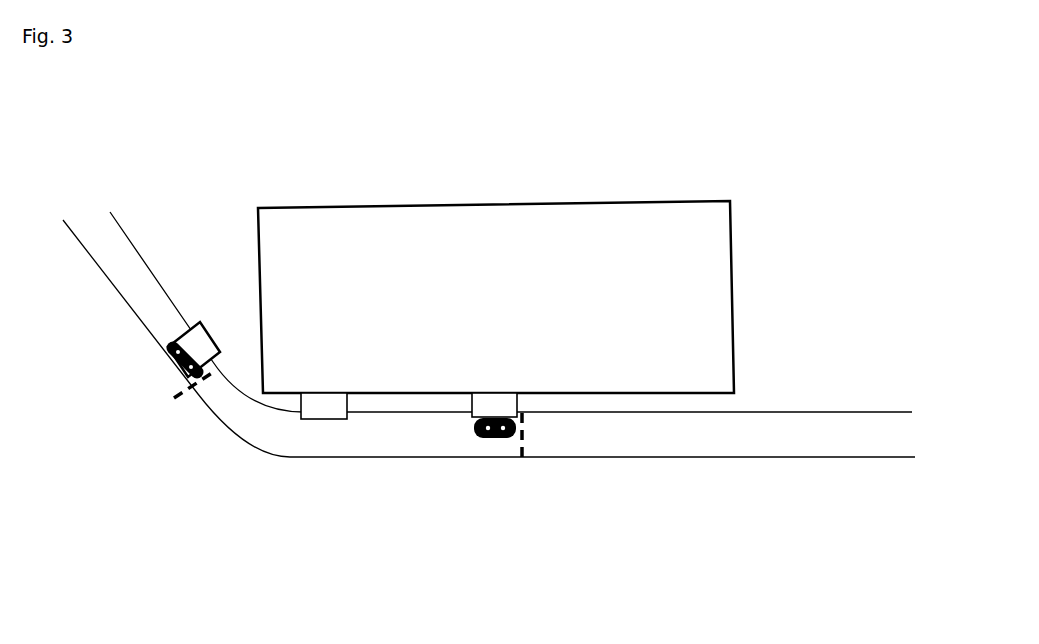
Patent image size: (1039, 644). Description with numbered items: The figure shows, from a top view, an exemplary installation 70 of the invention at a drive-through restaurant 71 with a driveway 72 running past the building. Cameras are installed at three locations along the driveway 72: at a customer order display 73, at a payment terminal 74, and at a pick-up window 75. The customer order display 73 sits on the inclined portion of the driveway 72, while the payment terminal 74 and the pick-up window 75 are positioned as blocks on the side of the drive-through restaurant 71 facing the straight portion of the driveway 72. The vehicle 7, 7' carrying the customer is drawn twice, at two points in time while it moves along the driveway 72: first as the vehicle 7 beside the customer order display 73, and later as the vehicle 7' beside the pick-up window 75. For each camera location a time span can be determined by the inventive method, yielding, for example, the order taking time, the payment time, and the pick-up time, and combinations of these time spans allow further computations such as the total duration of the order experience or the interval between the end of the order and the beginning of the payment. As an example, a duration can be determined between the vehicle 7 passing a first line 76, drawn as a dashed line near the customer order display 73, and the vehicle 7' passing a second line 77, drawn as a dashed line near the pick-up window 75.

The installation 70 is at (807, 167).
The drive-through restaurant 71 is at (610, 250).
The driveway 72 is at (127, 247).
The customer order display 73 is at (200, 342).
The payment terminal 74 is at (330, 405).
The pick-up window 75 is at (493, 403).
The first line 76 is at (193, 390).
The second line 77 is at (524, 444).
The vehicle 7 is at (130, 380).
The vehicle 7' is at (480, 519).